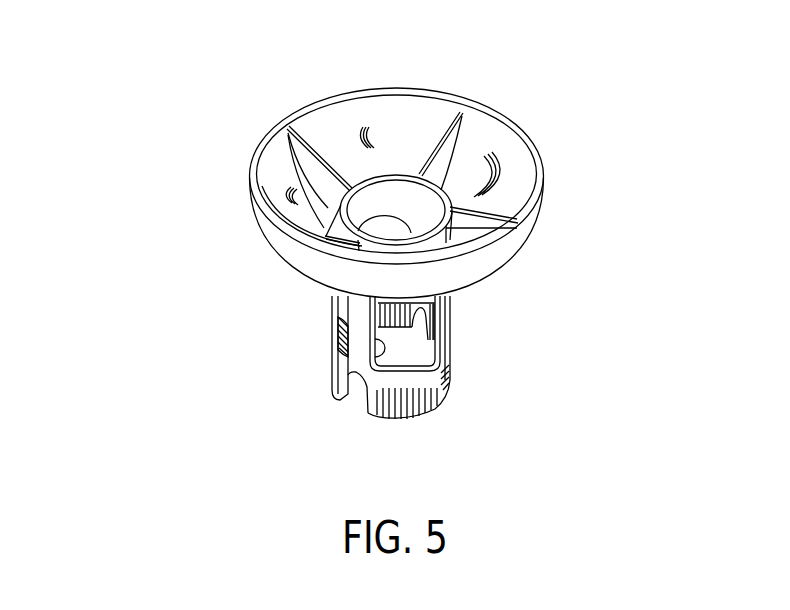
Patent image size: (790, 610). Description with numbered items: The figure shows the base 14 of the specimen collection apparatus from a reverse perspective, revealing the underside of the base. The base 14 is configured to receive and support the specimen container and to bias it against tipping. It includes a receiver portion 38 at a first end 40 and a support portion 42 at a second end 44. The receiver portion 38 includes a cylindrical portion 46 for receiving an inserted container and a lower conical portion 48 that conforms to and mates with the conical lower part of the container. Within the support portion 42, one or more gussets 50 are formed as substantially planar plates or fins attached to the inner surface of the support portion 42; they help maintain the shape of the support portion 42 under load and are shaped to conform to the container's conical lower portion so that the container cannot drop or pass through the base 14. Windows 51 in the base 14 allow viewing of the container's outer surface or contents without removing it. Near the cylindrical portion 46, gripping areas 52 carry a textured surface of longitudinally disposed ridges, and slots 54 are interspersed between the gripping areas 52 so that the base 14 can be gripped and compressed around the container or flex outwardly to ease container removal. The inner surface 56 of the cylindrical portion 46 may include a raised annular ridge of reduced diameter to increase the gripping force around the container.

The base 14 is at (145, 231).
The receiver portion 38 is at (543, 325).
The first end 40 is at (508, 405).
The support portion 42 is at (636, 232).
The second end 44 is at (560, 75).
The cylindrical portion 46 is at (452, 330).
The lower conical portion 48 is at (388, 197).
The gussets 50 is at (447, 148).
The windows 51 is at (376, 350).
The gripping areas 52 is at (440, 403).
The slots 54 is at (365, 393).
The inner surface 56 is at (338, 333).